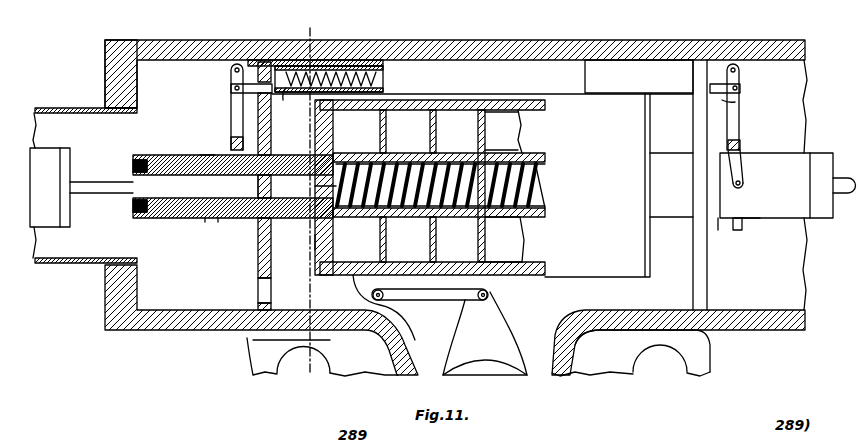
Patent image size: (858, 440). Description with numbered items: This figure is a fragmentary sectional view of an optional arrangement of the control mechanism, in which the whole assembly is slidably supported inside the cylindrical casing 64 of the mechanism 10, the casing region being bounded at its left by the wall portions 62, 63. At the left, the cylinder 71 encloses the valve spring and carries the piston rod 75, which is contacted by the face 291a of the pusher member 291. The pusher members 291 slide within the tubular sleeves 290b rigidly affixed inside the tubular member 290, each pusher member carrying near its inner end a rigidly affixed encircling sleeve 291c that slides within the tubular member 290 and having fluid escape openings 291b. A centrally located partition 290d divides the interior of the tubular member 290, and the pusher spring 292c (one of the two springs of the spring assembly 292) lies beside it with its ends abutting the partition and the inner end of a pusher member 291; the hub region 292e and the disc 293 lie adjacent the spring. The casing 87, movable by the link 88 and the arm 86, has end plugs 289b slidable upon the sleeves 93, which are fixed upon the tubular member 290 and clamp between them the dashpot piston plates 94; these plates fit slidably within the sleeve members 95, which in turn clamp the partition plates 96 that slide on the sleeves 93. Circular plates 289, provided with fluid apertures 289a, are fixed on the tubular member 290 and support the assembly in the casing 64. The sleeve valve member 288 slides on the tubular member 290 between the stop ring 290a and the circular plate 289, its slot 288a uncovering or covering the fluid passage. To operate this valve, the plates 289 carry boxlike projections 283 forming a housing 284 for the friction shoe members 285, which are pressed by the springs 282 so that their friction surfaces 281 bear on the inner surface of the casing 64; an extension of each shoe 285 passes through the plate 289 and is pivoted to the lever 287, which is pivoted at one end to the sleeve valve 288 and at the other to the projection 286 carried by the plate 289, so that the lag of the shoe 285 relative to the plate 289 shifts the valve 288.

The housing 10 is at (310, 28).
The end plate 62 is at (88, 108).
The housing wall block 63 is at (110, 60).
The cylindrical casing 64 is at (518, 45).
The cylinder 71 is at (40, 158).
The piston rod 75 is at (98, 186).
The arm 86 is at (497, 322).
The casing 87 is at (553, 110).
The link 88 is at (412, 298).
The tubular sleeves 93 is at (373, 150).
The dashpot piston plates 94 is at (372, 240).
The sleeve members 95 is at (420, 240).
The partition plates 96 is at (432, 132).
The friction surfaces 281 is at (370, 68).
The springs 282 is at (335, 62).
The boxlike projections 283 is at (395, 94).
The spring housing 284 is at (385, 79).
The friction shoe members 285 is at (746, 113).
The projection 286 is at (230, 83).
The lever 287 is at (230, 111).
The sleeve valve member 288 is at (205, 154).
The slot 288a is at (742, 222).
The circular plates 289 is at (256, 262).
The fluid apertures 289a is at (258, 290).
The end plugs 289b is at (318, 241).
The tubular member 290 is at (207, 222).
The stop ring 290a is at (133, 218).
The tubular sleeves 290b is at (220, 220).
The partition 290d is at (490, 220).
The pusher members 291 is at (207, 196).
The face 291a is at (120, 183).
The fluid escape openings 291b is at (133, 196).
The sleeves 291c is at (262, 197).
The clutch assembly 292 is at (430, 187).
The pusher spring 292c is at (540, 190).
The clutch hub 292e is at (336, 186).
The clutch disc 293 is at (498, 152).